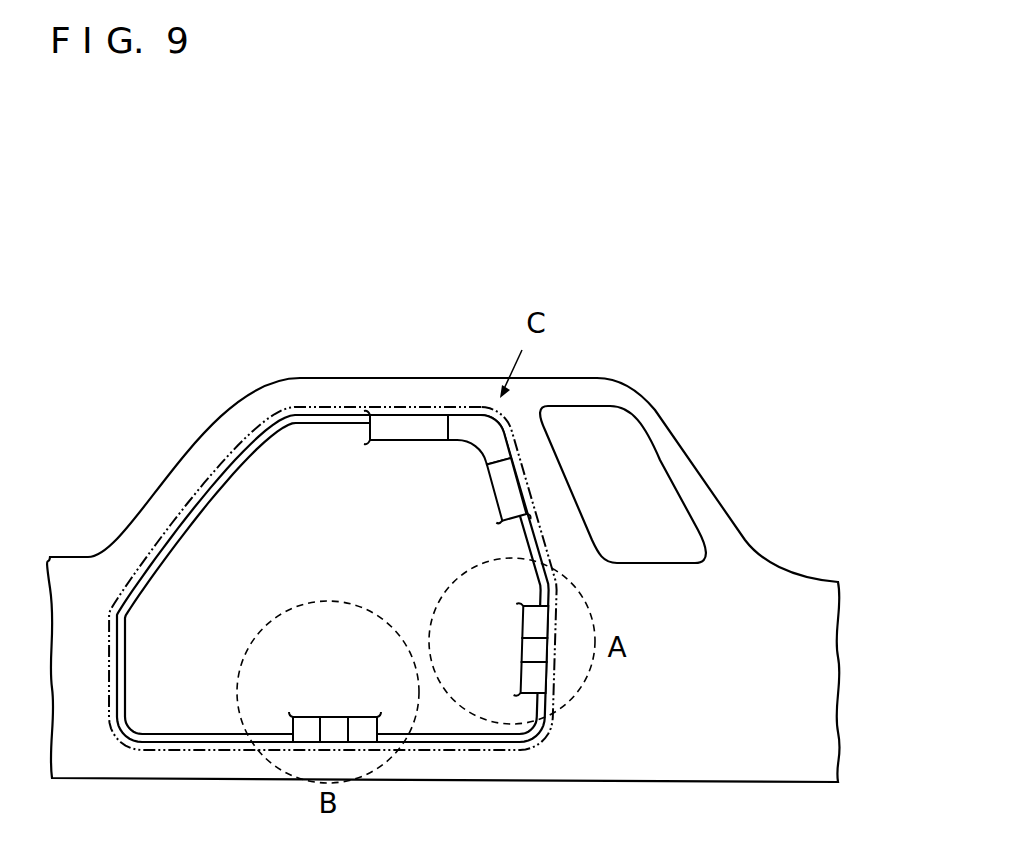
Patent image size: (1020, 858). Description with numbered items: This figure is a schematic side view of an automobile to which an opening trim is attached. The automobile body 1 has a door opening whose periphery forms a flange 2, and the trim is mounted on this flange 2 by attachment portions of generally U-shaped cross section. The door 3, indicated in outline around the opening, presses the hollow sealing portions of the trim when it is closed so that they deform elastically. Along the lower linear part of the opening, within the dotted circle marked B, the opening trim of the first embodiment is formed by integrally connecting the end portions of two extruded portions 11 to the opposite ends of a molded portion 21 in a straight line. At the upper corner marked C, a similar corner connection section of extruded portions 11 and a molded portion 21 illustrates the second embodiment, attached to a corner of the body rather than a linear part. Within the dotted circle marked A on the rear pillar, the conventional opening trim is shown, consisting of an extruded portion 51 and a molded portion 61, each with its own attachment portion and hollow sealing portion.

The automobile body 1 is at (347, 388).
The flange 2 is at (337, 416).
The door 3 is at (440, 407).
The extruded portion 11 is at (425, 430).
The molded portion 21 is at (477, 440).
The extruded portion 51 is at (535, 620).
The molded portion 61 is at (530, 647).